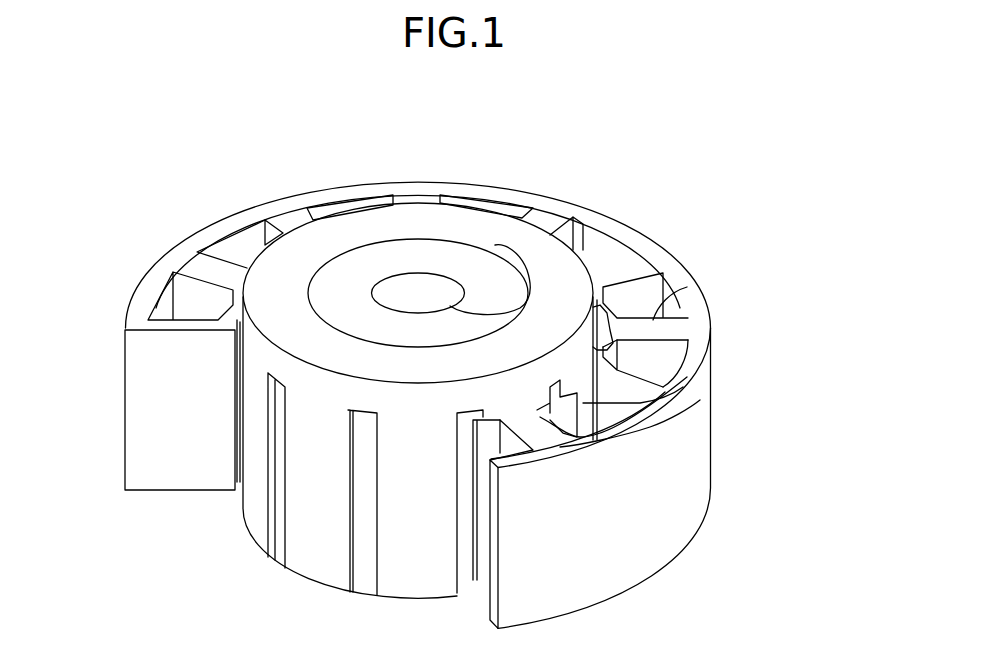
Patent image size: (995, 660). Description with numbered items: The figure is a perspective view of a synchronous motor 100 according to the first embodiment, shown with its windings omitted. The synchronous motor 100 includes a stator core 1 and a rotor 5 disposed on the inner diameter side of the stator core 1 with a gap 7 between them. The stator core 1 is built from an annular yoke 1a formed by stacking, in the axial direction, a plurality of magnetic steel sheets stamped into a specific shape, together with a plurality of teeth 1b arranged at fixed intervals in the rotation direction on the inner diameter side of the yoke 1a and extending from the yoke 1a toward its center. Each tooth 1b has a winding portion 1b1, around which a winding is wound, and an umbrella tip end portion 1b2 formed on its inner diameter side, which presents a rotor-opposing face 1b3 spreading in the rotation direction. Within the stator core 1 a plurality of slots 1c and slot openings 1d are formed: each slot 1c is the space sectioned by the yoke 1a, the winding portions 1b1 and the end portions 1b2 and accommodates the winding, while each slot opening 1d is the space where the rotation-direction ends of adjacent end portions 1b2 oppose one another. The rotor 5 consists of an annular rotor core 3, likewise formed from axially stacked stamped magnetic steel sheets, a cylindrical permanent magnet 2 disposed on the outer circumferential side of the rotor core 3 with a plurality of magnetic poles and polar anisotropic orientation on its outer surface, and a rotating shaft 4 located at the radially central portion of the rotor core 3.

The synchronous motor 100 is at (625, 136).
The stator core 1 is at (798, 228).
The annular yoke 1a is at (677, 275).
The tooth 1b is at (655, 318).
The winding portion 1b1 is at (650, 336).
The umbrella tip end portion 1b2 is at (640, 343).
The rotor-opposing face 1b3 is at (630, 368).
The slot 1c is at (600, 400).
The slot opening 1d is at (580, 455).
The cylindrical permanent magnet 2 is at (490, 237).
The rotor core 3 is at (485, 287).
The rotating shaft 4 is at (482, 345).
The rotor 5 is at (720, 153).
The gap 7 is at (233, 310).